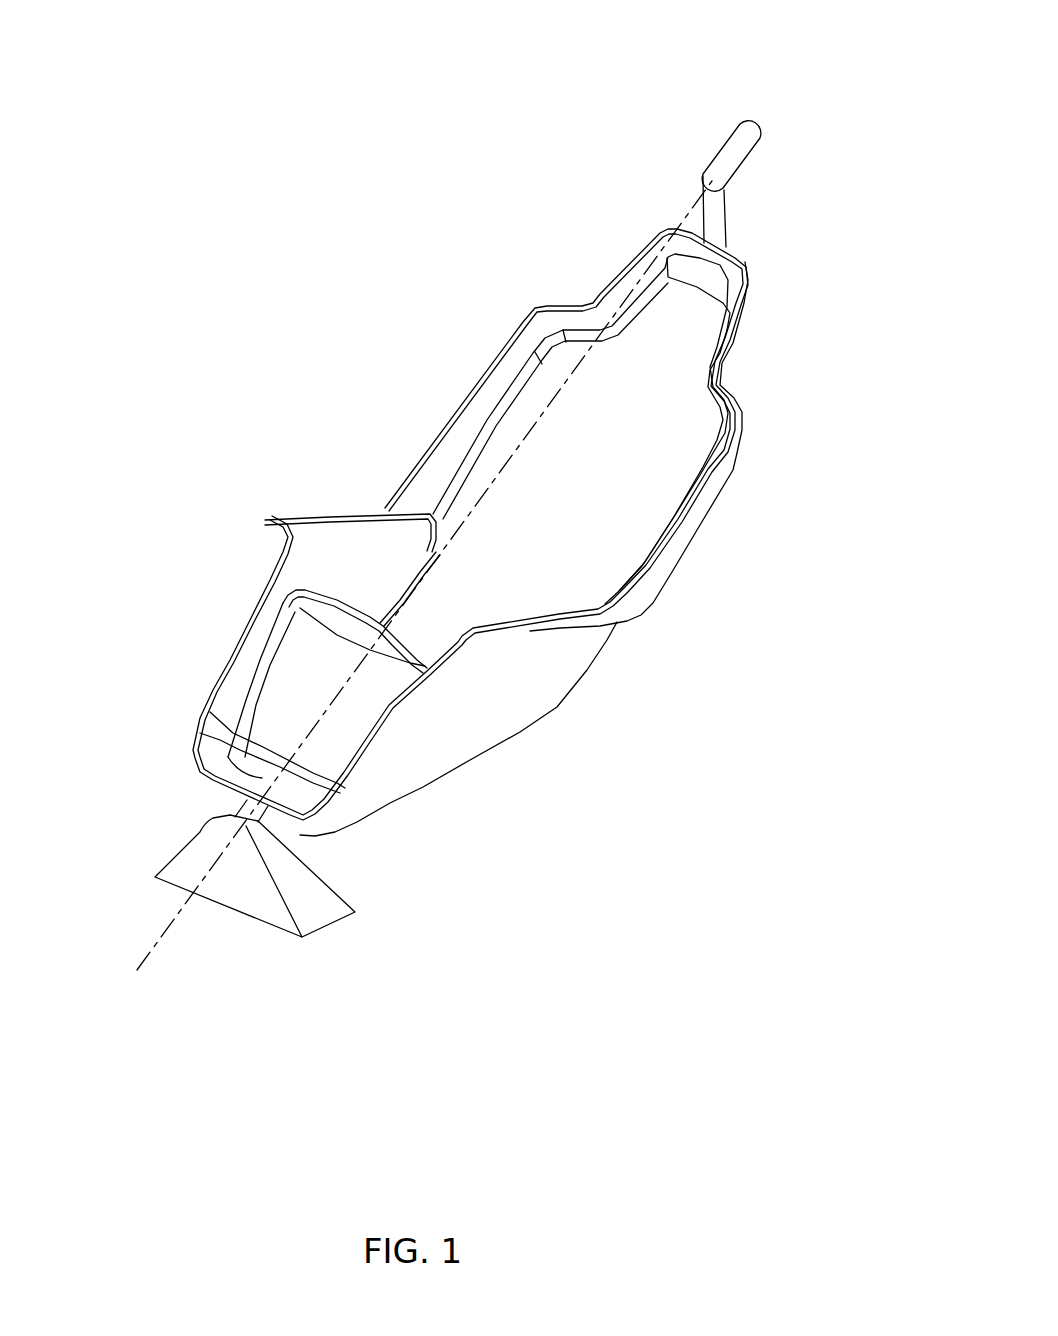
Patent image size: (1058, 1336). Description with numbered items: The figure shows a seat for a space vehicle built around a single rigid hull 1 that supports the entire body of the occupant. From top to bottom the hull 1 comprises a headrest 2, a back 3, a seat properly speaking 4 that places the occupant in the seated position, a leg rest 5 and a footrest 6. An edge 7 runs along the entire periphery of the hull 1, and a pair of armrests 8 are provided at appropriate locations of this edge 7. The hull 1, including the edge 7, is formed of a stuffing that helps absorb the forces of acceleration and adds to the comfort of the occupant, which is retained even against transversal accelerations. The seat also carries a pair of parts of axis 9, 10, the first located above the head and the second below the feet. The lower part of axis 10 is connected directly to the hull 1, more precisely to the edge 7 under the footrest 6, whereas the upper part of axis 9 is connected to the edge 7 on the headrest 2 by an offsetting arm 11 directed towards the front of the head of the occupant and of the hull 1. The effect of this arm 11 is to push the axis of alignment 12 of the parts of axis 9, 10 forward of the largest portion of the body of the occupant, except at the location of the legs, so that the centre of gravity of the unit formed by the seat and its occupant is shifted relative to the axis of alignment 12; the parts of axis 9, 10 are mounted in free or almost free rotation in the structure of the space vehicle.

The hull 1 is at (492, 252).
The headrest 2 is at (680, 315).
The back 3 is at (607, 473).
The seat properly speaking 4 is at (423, 648).
The leg rest 5 is at (293, 678).
The footrest 6 is at (205, 734).
The edge 7 is at (446, 420).
The armrests 8 is at (510, 628).
The part of axis 9 is at (737, 145).
The part of axis 10 is at (292, 825).
The offsetting arm 11 is at (728, 230).
The axis of alignment 12 is at (147, 958).